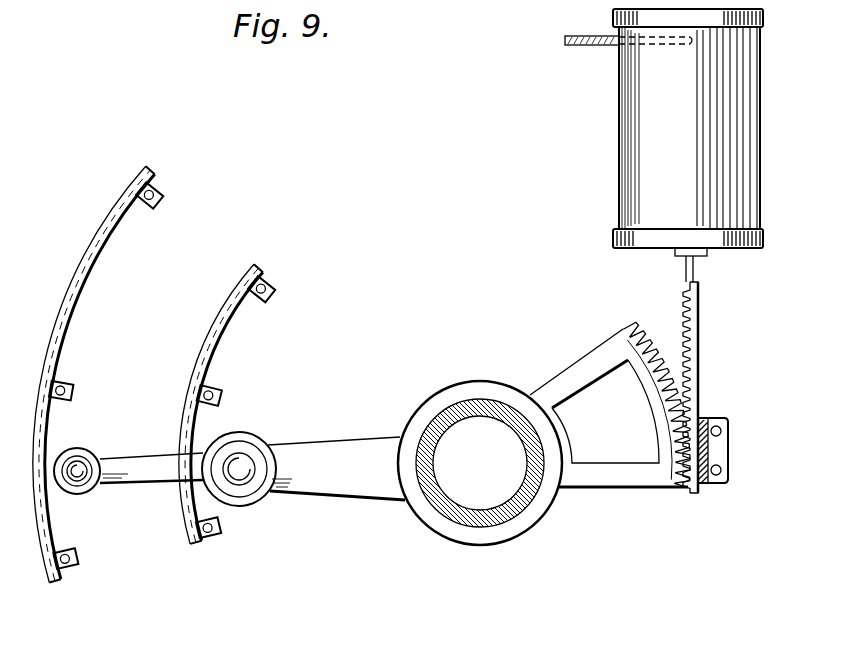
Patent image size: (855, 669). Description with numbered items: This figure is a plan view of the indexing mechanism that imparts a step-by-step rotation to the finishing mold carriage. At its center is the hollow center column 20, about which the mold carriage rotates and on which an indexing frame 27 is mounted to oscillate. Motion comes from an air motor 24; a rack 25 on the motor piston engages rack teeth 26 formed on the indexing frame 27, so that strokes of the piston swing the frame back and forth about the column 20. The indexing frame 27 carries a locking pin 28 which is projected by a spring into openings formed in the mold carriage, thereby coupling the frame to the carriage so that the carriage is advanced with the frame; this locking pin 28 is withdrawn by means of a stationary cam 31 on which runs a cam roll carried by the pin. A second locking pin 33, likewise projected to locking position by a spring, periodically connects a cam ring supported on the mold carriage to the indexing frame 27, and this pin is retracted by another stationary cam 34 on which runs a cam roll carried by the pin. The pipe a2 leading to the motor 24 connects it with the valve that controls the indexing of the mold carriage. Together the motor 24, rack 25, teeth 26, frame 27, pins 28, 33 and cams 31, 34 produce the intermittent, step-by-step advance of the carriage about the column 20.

The hollow center column 20 is at (508, 507).
The air motor 24 is at (637, 146).
The rack 25 is at (685, 306).
The rack teeth 26 is at (641, 332).
The indexing frame 27 is at (348, 478).
The locking pin 28 is at (243, 482).
The stationary cam 31 is at (190, 430).
The locking pin 33 is at (80, 468).
The stationary cam 34 is at (57, 341).
The piston rod a2 is at (586, 45).